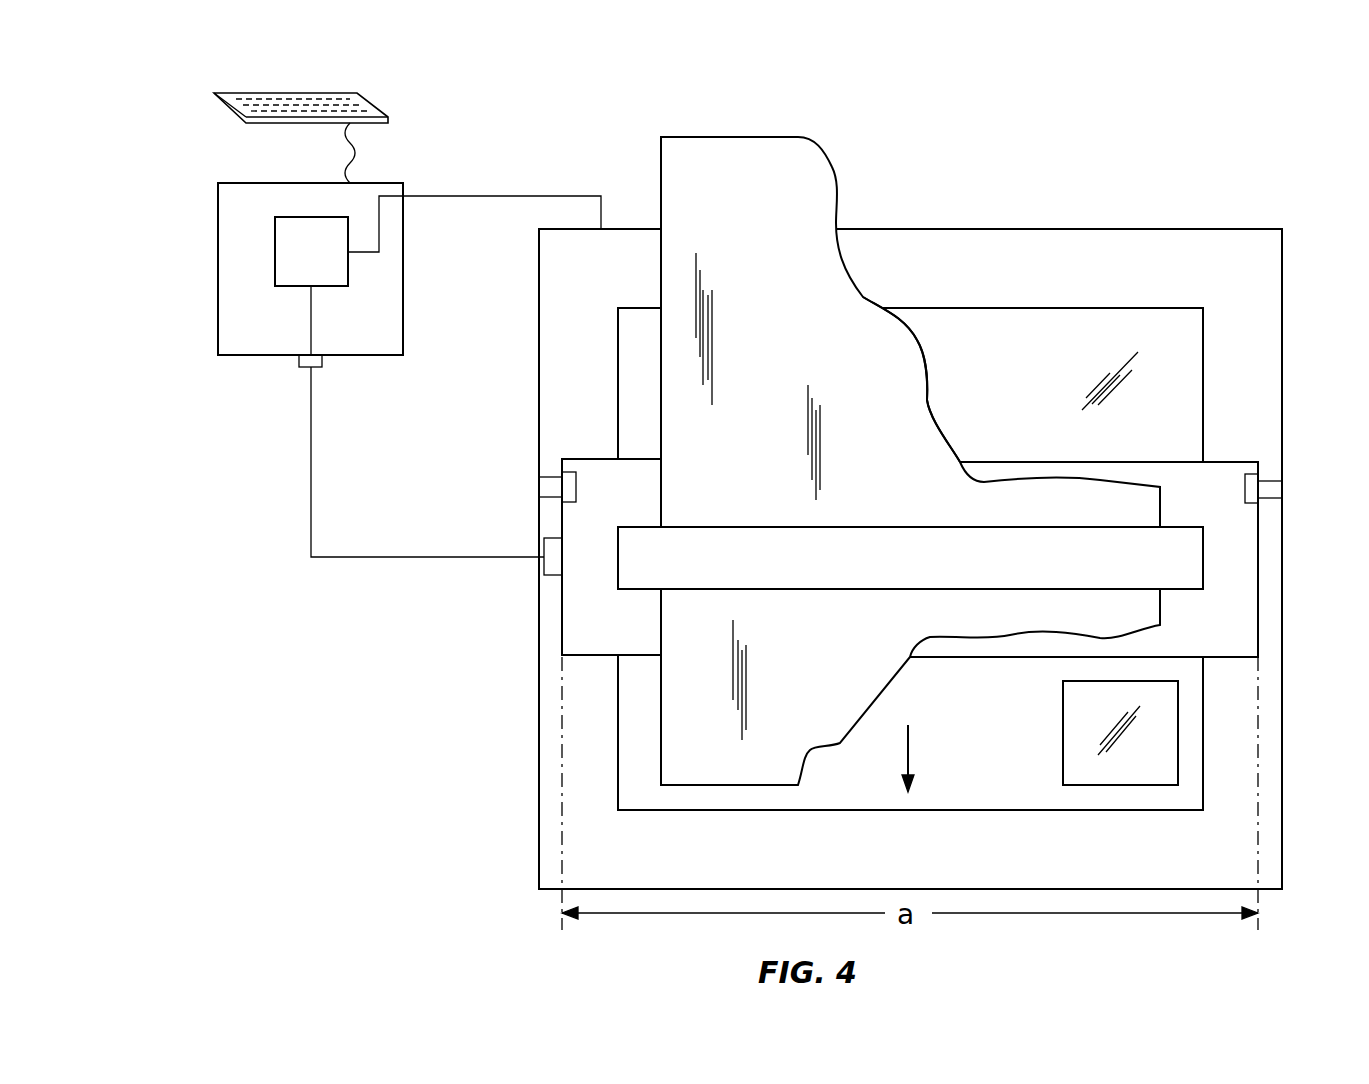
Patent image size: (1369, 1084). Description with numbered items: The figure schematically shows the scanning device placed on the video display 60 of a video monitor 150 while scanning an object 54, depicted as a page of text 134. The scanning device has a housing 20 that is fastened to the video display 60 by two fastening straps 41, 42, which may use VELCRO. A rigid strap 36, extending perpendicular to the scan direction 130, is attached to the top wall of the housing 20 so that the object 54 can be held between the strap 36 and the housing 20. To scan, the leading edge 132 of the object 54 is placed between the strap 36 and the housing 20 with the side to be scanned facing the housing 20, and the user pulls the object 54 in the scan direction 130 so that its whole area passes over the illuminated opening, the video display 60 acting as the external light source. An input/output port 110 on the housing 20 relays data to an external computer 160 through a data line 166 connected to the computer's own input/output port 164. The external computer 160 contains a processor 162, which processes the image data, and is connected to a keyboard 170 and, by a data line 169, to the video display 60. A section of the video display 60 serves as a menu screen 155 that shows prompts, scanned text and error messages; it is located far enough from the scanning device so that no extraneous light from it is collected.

The housing 20 is at (1258, 608).
The strap 36 is at (1205, 548).
The fastening strap 41 is at (538, 487).
The fastening strap 42 is at (1283, 490).
The object 54 is at (930, 400).
The video display 60 is at (1203, 340).
The input/output port 110 is at (542, 563).
The scan direction 130 is at (912, 752).
The leading edge 132 is at (731, 786).
The workpiece 134 is at (696, 136).
The video monitor 150 is at (1057, 229).
The menu screen 155 is at (1063, 731).
The external computer 160 is at (218, 334).
The processor 162 is at (275, 252).
The input/output port 164 is at (322, 367).
The data line 166 is at (433, 553).
The data line 169 is at (490, 195).
The keyboard 170 is at (214, 98).